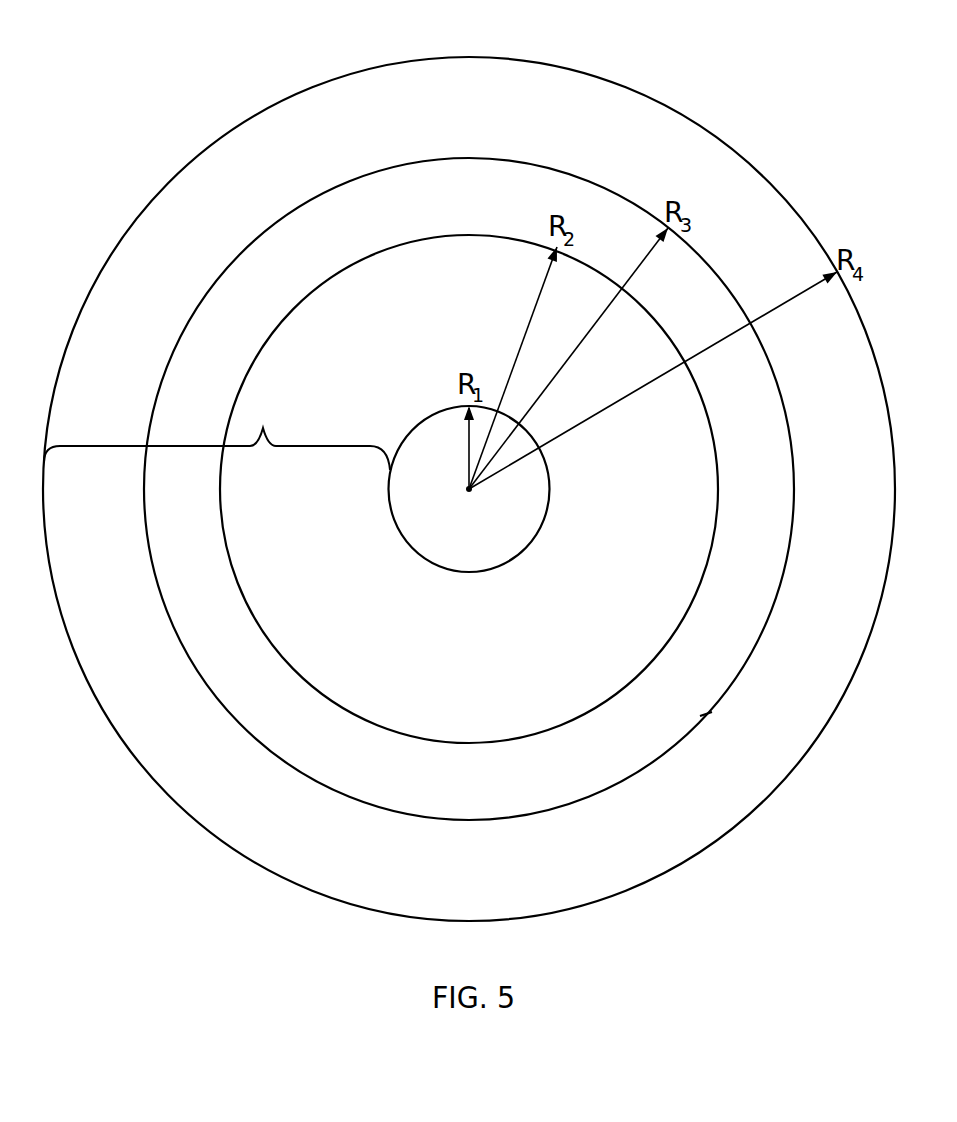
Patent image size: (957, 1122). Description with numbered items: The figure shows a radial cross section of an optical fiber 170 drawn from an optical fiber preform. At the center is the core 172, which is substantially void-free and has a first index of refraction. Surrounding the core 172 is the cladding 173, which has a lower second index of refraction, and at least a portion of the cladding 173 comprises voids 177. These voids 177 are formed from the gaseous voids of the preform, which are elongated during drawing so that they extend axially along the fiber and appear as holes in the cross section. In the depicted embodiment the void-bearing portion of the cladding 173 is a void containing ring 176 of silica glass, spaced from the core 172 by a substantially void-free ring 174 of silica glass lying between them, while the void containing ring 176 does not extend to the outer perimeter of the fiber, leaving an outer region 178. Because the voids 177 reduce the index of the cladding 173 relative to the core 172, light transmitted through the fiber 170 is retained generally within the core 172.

The optical fiber 170 is at (162, 108).
The core 172 is at (491, 537).
The cladding 173 is at (217, 432).
The substantially void-free ring 174 is at (493, 662).
The void containing ring 176 is at (493, 797).
The voids 177 is at (690, 712).
The outer cladding 178 is at (493, 884).